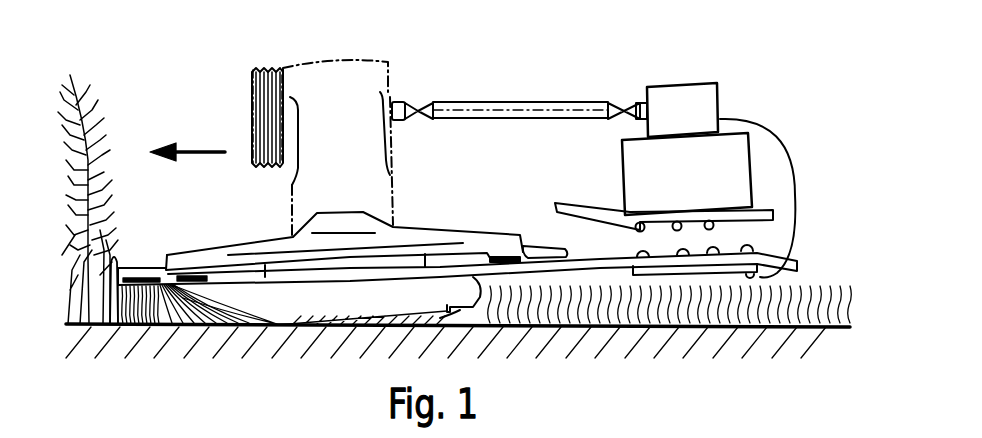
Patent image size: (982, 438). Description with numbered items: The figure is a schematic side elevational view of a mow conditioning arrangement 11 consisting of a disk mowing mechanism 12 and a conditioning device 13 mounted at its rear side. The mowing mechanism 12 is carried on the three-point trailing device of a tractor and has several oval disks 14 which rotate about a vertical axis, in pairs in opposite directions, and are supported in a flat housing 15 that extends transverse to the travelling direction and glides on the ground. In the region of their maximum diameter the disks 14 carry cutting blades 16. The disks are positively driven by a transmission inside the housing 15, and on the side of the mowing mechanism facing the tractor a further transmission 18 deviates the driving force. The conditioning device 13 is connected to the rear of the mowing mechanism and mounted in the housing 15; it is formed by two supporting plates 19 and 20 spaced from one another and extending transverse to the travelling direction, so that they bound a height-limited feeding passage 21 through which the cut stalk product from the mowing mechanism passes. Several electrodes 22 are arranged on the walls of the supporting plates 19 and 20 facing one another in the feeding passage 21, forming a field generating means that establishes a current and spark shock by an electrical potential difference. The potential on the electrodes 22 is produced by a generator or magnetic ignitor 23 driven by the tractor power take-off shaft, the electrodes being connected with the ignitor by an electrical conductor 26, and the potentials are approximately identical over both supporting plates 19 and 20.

The mow conditioning arrangement 11 is at (572, 38).
The disk mowing mechanism 12 is at (436, 198).
The conditioning device 13 is at (776, 170).
The oval disks 14 is at (263, 237).
The housing 15 is at (267, 297).
The cutting blades 16 is at (138, 262).
The further transmission 18 is at (318, 98).
The supporting plate 19 is at (683, 258).
The supporting plate 20 is at (773, 215).
The feeding passage 21 is at (727, 236).
The electrodes 22 is at (645, 260).
The magnetic ignitor 23 is at (738, 110).
The electrical conductor 26 is at (798, 198).